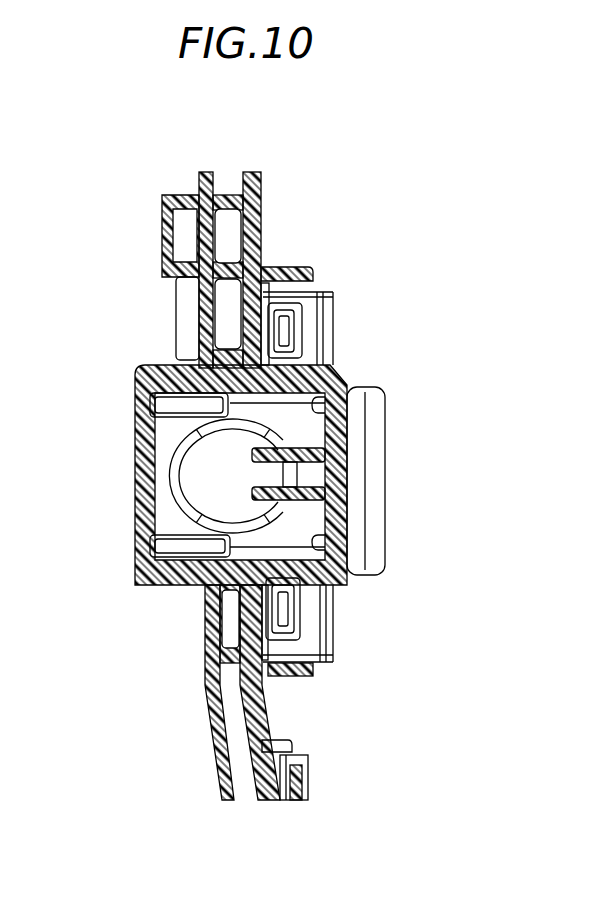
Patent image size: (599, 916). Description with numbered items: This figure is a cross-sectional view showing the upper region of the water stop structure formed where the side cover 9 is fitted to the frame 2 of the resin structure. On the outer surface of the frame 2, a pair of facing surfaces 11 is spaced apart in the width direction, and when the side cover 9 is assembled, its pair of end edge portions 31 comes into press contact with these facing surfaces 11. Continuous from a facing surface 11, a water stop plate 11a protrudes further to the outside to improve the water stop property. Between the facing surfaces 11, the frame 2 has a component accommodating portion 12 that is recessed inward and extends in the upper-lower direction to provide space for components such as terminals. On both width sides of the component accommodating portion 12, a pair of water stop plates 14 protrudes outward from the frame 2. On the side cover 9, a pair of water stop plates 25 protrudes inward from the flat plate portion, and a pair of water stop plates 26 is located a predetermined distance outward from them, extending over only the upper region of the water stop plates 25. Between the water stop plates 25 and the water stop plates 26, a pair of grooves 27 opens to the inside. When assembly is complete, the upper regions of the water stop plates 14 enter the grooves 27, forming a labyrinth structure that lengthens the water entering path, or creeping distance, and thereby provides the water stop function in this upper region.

The frame 2 is at (125, 466).
The side cover 9 is at (352, 472).
The facing surfaces 11 is at (333, 294).
The water stop plate 11a is at (318, 268).
The component accommodating portion 12 is at (165, 435).
The water stop plates 14 is at (210, 357).
The water stop plates 25 is at (150, 396).
The water stop plates 26 is at (218, 335).
The grooves 27 is at (330, 357).
The end edge portions 31 is at (263, 278).